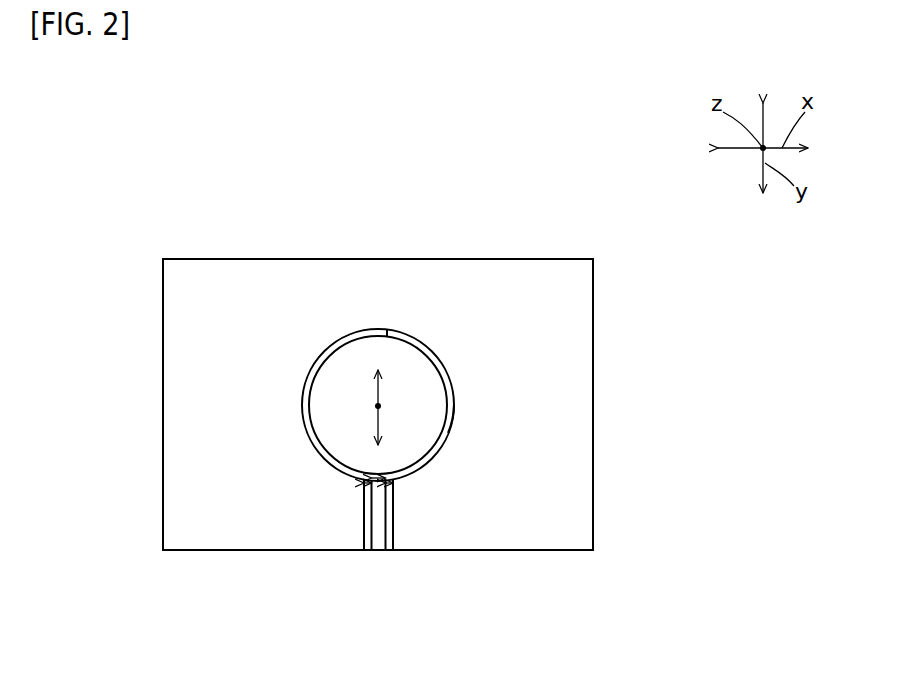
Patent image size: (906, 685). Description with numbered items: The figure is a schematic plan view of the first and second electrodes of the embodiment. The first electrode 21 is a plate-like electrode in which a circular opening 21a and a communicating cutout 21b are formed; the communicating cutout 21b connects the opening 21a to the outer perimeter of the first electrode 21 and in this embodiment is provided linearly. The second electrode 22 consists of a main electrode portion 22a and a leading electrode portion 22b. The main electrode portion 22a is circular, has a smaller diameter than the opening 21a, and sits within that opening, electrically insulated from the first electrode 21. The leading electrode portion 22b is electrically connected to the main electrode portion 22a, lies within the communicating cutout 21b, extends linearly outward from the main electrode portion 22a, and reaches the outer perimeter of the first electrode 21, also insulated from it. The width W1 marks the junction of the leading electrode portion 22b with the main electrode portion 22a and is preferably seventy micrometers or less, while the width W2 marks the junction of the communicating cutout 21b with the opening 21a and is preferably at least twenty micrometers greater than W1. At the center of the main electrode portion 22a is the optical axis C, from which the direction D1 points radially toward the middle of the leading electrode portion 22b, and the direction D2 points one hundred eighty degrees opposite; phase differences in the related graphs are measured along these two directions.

The first electrode 21 is at (595, 373).
The opening 21a is at (419, 344).
The communicating cutout 21b is at (377, 504).
The second electrode 22 is at (301, 404).
The main electrode portion 22a is at (440, 432).
The leading electrode portion 22b is at (379, 518).
The optical axis C is at (380, 405).
The direction D1 is at (380, 422).
The direction D2 is at (378, 390).
The width of the junction of the leading electrode portion with the main electrode p W1 is at (380, 480).
The width of the junction of the communicating cutout with the opening W2 is at (393, 483).